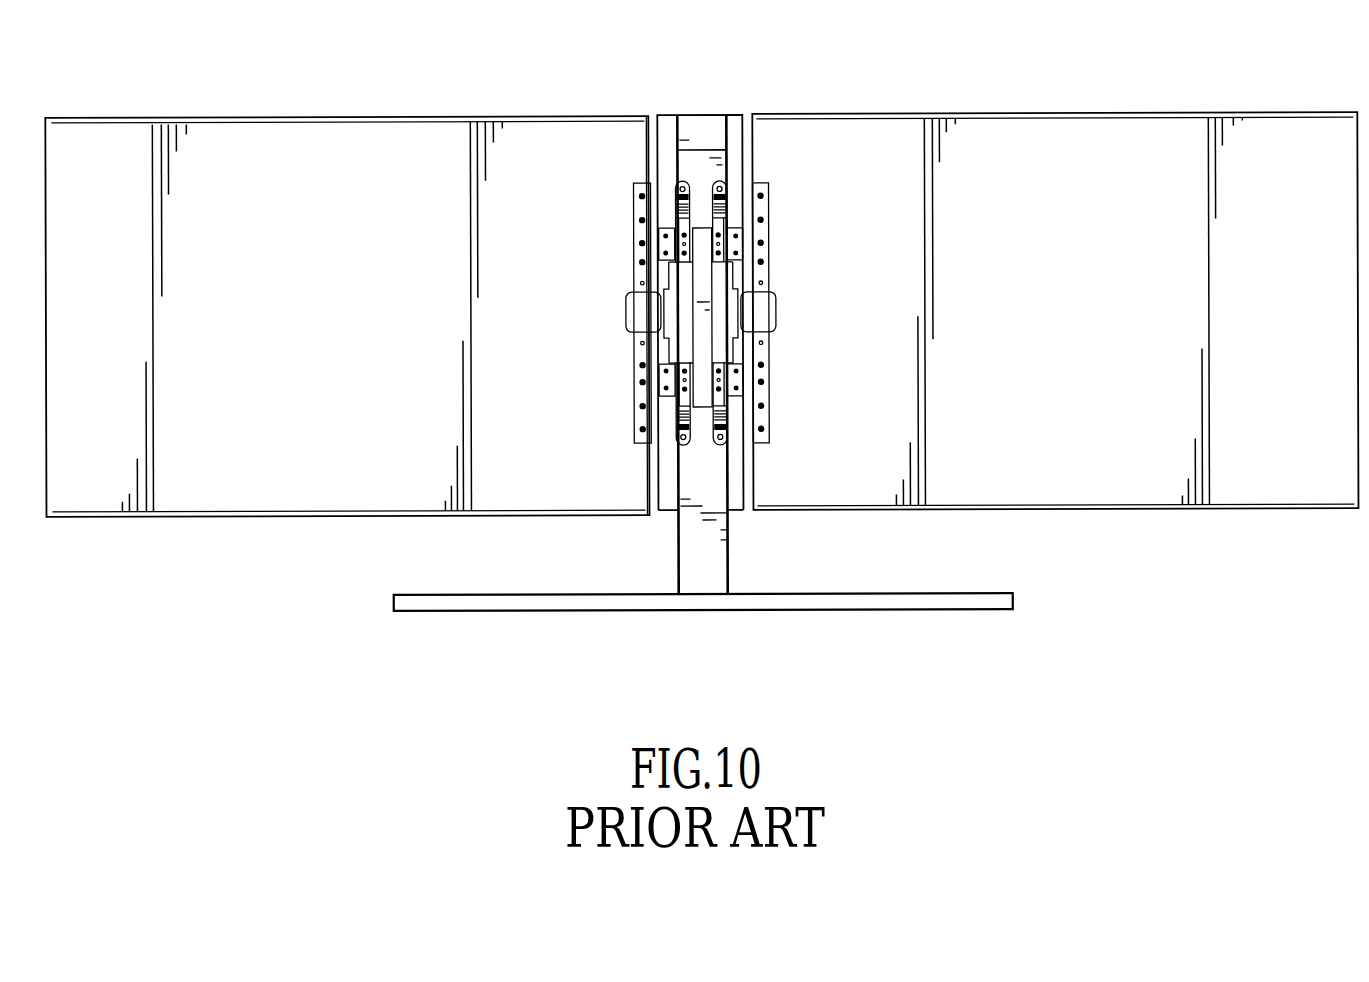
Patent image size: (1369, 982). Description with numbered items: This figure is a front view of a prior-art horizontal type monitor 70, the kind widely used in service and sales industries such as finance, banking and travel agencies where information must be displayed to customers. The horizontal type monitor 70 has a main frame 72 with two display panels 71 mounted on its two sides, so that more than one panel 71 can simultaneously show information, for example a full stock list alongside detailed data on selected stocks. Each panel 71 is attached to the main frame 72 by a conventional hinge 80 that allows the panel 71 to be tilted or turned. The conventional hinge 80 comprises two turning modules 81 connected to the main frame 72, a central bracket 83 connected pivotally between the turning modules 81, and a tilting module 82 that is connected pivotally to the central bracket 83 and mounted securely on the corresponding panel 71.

The horizontal type monitor 70 is at (411, 87).
The display panel 71 is at (1016, 128).
The main frame 72 is at (703, 122).
The conventional hinge 80 is at (733, 210).
The turning module 81 is at (714, 432).
The tilting module 82 is at (762, 312).
The central bracket 83 is at (719, 343).